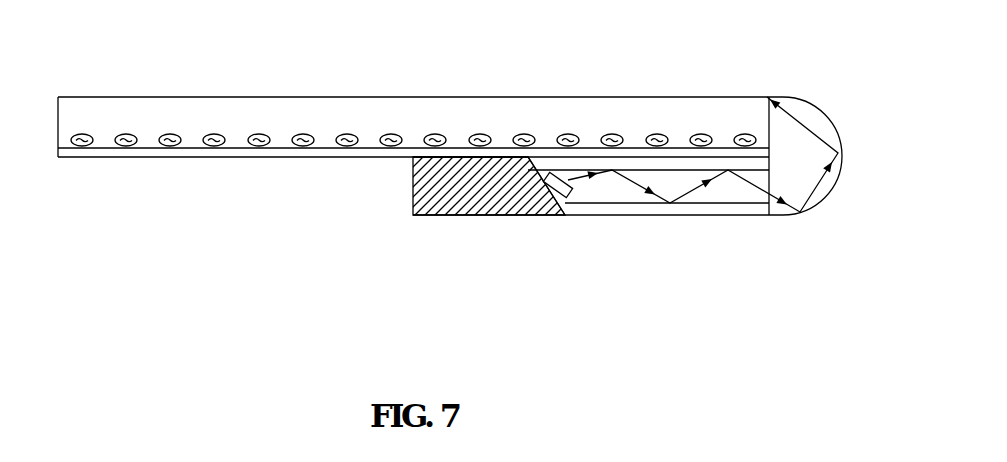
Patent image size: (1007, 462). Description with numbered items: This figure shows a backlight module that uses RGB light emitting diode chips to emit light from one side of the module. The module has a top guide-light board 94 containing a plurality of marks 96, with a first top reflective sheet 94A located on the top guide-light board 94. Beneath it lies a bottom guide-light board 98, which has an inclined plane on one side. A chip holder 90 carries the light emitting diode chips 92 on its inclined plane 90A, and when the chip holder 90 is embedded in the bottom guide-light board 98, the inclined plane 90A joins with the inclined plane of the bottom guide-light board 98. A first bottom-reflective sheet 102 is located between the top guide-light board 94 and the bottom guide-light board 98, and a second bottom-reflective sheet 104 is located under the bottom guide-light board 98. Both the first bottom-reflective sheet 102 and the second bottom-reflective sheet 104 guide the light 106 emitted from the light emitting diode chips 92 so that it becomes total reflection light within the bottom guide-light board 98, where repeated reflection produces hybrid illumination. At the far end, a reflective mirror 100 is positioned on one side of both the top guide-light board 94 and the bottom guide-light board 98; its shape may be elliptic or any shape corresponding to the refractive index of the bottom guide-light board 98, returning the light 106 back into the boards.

The chip holder 90 is at (430, 183).
The inclined plane of the chip holder 90A is at (545, 183).
The light emitting diode chips 92 is at (483, 187).
The top guide-light board 94 is at (370, 110).
The first top reflective sheet 94A is at (192, 155).
The marks 96 is at (513, 137).
The bottom guide-light board 98 is at (673, 183).
The reflective mirror 100 is at (842, 140).
The first bottom-reflective sheet 102 is at (720, 167).
The second bottom-reflective sheet 104 is at (735, 210).
The light 106 is at (598, 176).